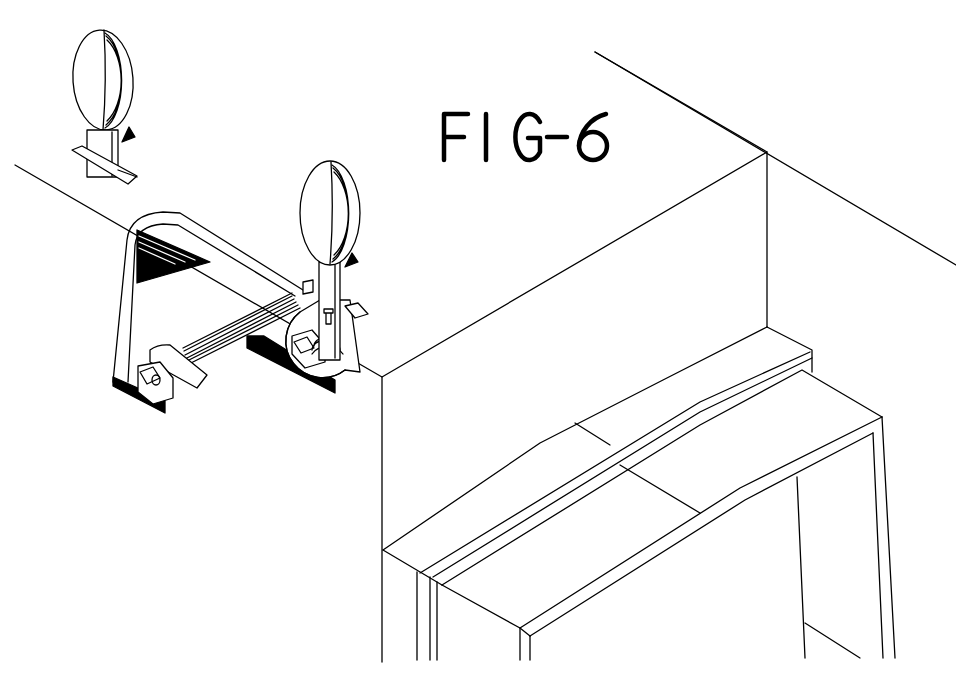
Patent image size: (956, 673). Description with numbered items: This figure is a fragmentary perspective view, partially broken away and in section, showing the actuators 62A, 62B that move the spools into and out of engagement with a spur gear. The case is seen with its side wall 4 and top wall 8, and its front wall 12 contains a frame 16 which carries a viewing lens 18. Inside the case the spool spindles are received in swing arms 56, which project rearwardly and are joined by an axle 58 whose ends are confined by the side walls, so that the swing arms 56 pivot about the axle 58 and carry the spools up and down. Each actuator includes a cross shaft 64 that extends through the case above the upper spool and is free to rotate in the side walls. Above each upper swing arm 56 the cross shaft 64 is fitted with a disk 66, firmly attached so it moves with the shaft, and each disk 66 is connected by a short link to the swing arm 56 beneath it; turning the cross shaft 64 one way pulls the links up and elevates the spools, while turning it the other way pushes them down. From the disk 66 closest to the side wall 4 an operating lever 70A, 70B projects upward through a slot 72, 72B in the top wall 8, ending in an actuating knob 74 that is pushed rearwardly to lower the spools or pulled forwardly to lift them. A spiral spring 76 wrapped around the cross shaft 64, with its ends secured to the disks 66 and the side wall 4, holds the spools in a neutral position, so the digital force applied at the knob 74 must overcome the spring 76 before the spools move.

The side wall 4 is at (262, 555).
The top wall 8 is at (525, 262).
The front wall 12 is at (742, 263).
The frame 16 is at (603, 498).
The viewing lens 18 is at (708, 618).
The swing arm 56 is at (182, 385).
The axle 58 is at (150, 404).
The actuator 62A is at (357, 257).
The actuator 62B is at (133, 132).
The cross shaft 64 is at (317, 387).
The disk 66 is at (305, 313).
The operating lever 70A is at (333, 290).
The operating lever 70B is at (87, 133).
The slot 72 is at (355, 310).
The slot 72B is at (128, 177).
The actuating knob 74 is at (338, 165).
The spiral spring 76 is at (335, 332).